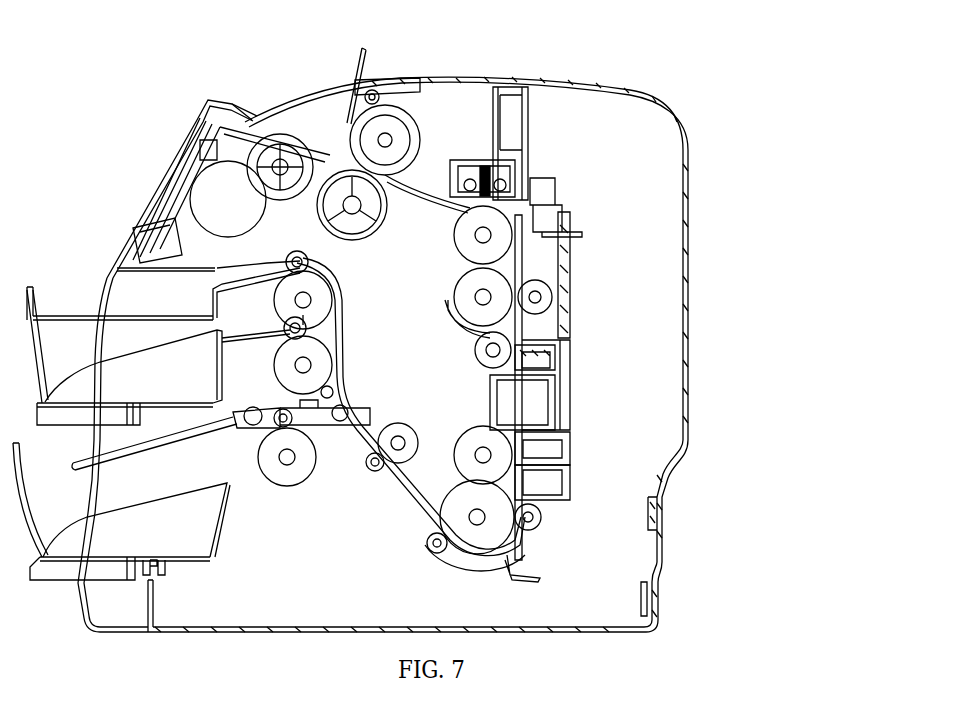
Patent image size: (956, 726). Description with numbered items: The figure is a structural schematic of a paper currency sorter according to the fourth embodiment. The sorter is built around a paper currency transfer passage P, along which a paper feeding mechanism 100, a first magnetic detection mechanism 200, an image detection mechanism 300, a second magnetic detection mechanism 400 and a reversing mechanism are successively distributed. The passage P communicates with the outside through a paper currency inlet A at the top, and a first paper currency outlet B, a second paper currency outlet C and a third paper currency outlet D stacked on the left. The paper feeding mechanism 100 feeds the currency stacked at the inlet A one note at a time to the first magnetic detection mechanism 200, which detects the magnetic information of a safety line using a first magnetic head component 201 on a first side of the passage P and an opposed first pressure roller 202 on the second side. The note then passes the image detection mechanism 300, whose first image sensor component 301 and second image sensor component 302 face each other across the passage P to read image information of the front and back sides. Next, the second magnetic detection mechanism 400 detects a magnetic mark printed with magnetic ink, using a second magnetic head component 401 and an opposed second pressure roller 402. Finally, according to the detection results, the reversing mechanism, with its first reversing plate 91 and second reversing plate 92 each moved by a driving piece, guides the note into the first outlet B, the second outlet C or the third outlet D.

The paper feeding mechanism 100 is at (410, 138).
The first magnetic detection mechanism 200 is at (823, 230).
The first magnetic head component 201 is at (565, 233).
The first pressure roller 202 is at (571, 268).
The image detection mechanism 300 is at (843, 375).
The first image sensor component 301 is at (550, 390).
The second image sensor component 302 is at (503, 398).
The second magnetic detection mechanism 400 is at (858, 495).
The second magnetic head component 401 is at (550, 468).
The second pressure roller 402 is at (543, 502).
The first reversing plate 91 is at (340, 447).
The second reversing plate 92 is at (333, 337).
The paper currency transfer passage P is at (410, 493).
The paper currency inlet A is at (288, 173).
The first paper currency outlet B is at (121, 511).
The second paper currency outlet C is at (124, 357).
The third paper currency outlet D is at (163, 290).